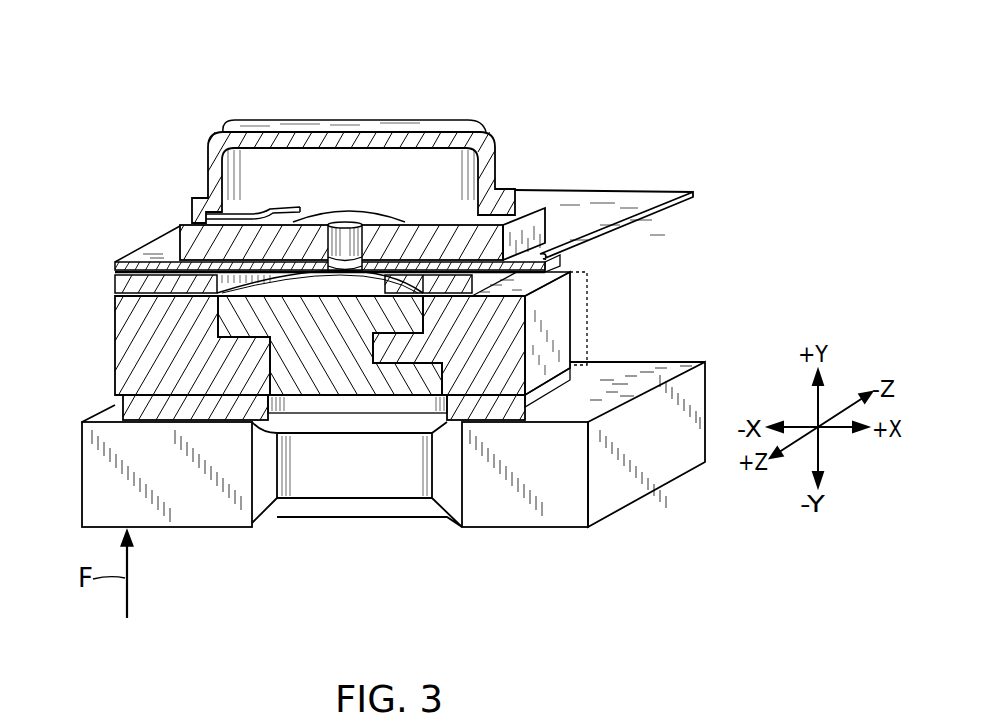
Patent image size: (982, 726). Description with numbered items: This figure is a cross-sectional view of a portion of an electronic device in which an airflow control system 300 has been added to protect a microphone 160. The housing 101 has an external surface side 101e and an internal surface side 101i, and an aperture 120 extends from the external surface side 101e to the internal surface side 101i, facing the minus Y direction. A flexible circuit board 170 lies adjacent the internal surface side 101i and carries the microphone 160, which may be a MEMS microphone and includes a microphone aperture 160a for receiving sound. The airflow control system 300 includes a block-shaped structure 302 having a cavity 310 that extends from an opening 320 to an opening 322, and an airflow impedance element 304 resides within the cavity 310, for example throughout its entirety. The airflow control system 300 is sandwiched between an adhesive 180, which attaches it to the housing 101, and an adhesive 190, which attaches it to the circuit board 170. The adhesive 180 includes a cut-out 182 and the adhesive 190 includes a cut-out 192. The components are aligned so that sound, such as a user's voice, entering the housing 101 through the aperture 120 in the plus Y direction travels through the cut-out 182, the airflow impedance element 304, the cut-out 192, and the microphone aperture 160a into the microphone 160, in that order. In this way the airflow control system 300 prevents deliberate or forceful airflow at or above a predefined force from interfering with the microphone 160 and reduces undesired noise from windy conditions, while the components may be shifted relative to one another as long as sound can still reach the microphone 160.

The housing 101 is at (635, 470).
The external surface side 101e is at (543, 507).
The internal surface side 101i is at (642, 377).
The aperture 120 is at (263, 477).
The microphone 160 is at (258, 132).
The microphone aperture 160a is at (345, 222).
The circuit board 170 is at (638, 195).
The adhesive 180 is at (120, 405).
The cut-out 182 is at (292, 404).
The adhesive 190 is at (130, 284).
The cut-out 192 is at (292, 218).
The airflow control system 300 is at (587, 318).
The block-shaped structure 302 is at (128, 346).
The airflow impedance element 304 is at (330, 363).
The cavity 310 is at (267, 293).
The opening 320 is at (285, 393).
The opening 322 is at (250, 284).